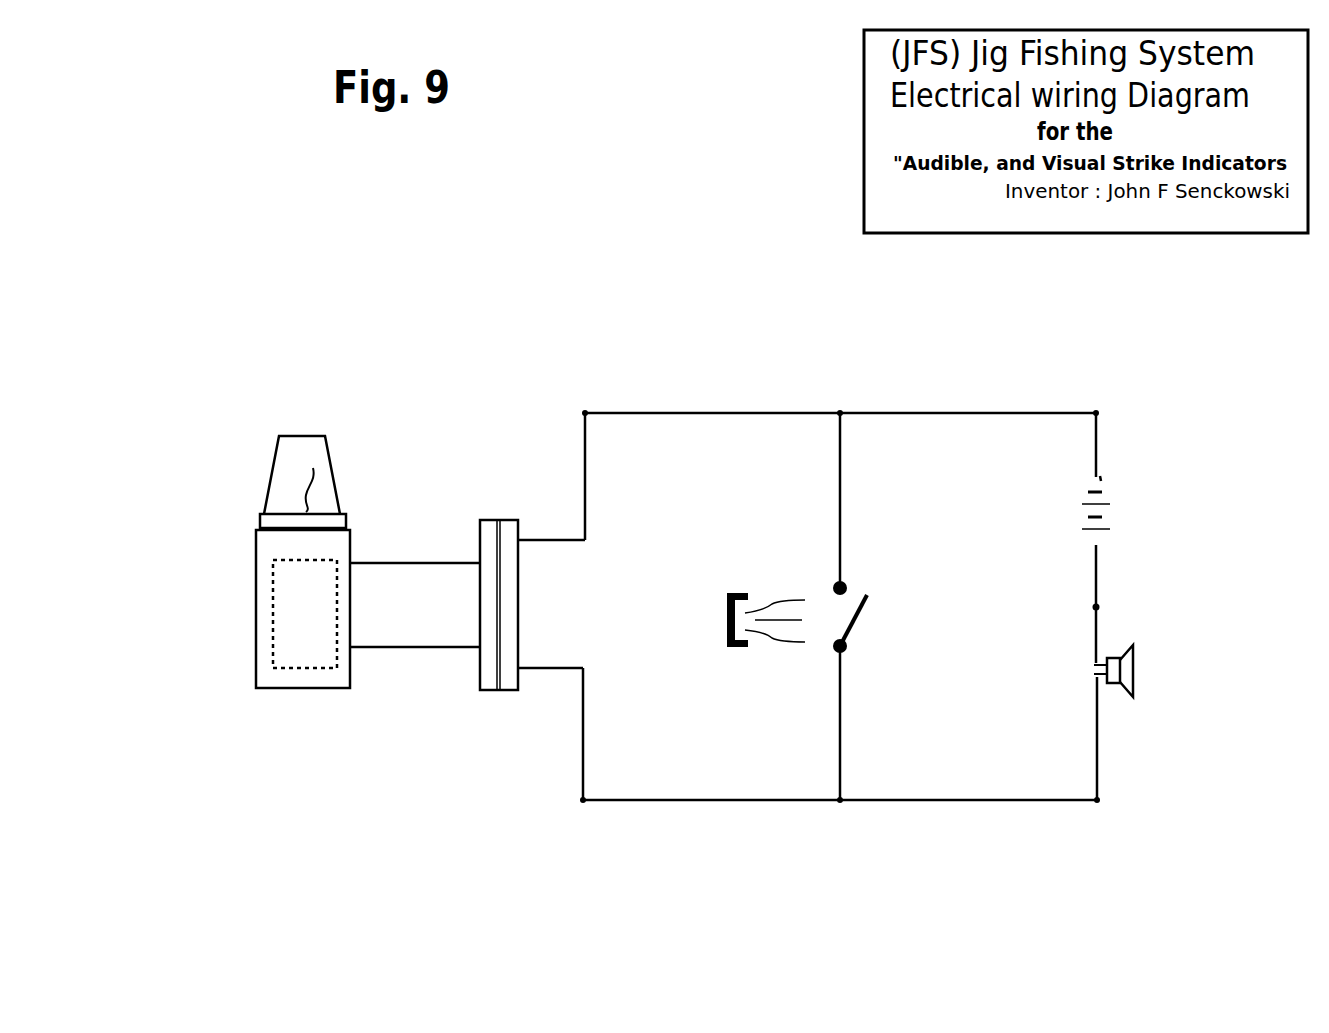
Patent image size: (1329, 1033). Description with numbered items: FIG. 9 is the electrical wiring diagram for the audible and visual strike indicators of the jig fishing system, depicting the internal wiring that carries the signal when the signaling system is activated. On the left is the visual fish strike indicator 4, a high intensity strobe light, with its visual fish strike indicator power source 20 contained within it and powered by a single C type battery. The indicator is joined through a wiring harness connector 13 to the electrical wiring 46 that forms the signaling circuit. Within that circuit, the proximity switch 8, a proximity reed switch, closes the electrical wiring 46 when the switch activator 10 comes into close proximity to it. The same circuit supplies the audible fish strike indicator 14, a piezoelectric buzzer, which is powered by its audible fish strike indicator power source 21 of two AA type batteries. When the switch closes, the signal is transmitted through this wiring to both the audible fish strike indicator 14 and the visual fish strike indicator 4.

The visual fish strike indicator 4 is at (301, 436).
The visual fish strike indicator power source 20 is at (309, 633).
The wiring harness connector 13 is at (497, 520).
The electrical wiring 46 is at (780, 372).
The switch activator 10 is at (740, 593).
The proximity switch 8 is at (845, 650).
The audible fish strike indicator power source 21 is at (1083, 505).
The audible fish strike indicator 14 is at (1093, 670).